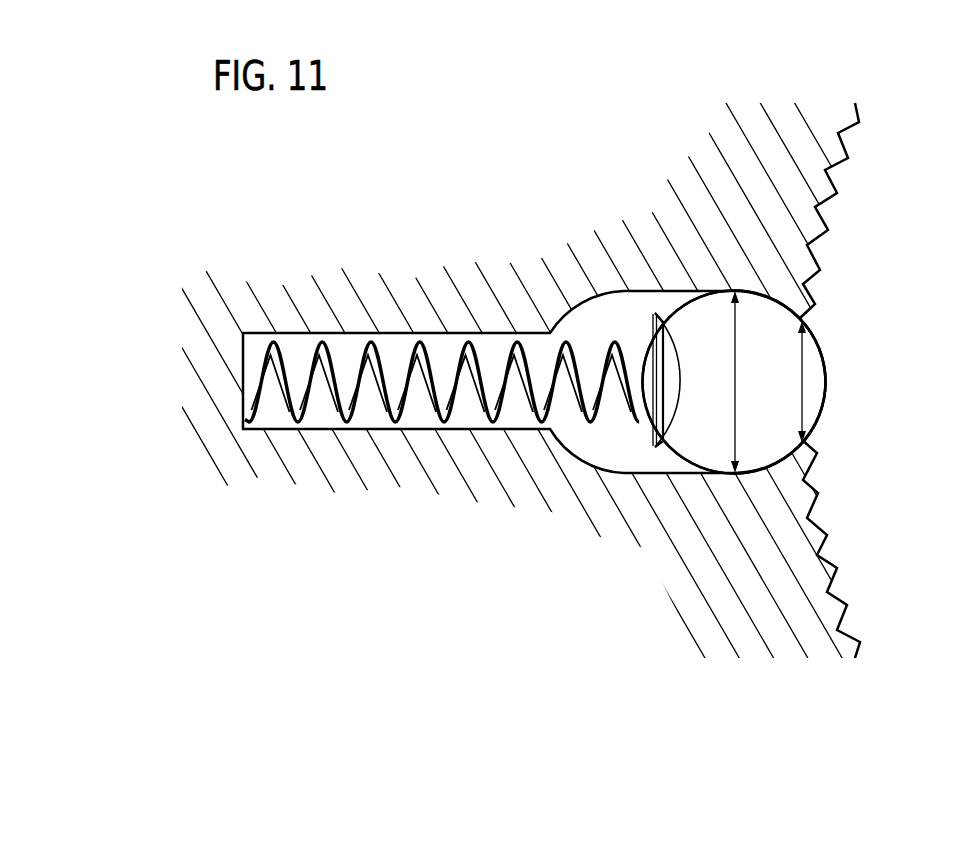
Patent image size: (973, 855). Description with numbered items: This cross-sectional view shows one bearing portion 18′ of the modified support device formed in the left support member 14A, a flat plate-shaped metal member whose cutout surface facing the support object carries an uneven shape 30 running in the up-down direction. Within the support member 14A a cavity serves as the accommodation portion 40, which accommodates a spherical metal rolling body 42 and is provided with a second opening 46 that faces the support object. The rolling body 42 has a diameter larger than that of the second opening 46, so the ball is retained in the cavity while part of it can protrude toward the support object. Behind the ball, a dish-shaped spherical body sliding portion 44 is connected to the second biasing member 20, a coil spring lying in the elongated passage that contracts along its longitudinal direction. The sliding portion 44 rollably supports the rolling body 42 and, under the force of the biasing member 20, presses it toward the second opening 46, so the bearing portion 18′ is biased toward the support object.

The left support member 14A is at (760, 550).
The bearing portion 18′ is at (839, 421).
The second biasing member 20 is at (437, 407).
The uneven shape 30 is at (859, 198).
The accommodation portion 40 is at (608, 318).
The rolling body 42 is at (827, 365).
The spherical body sliding portion 44 is at (643, 432).
The second opening 46 is at (835, 328).